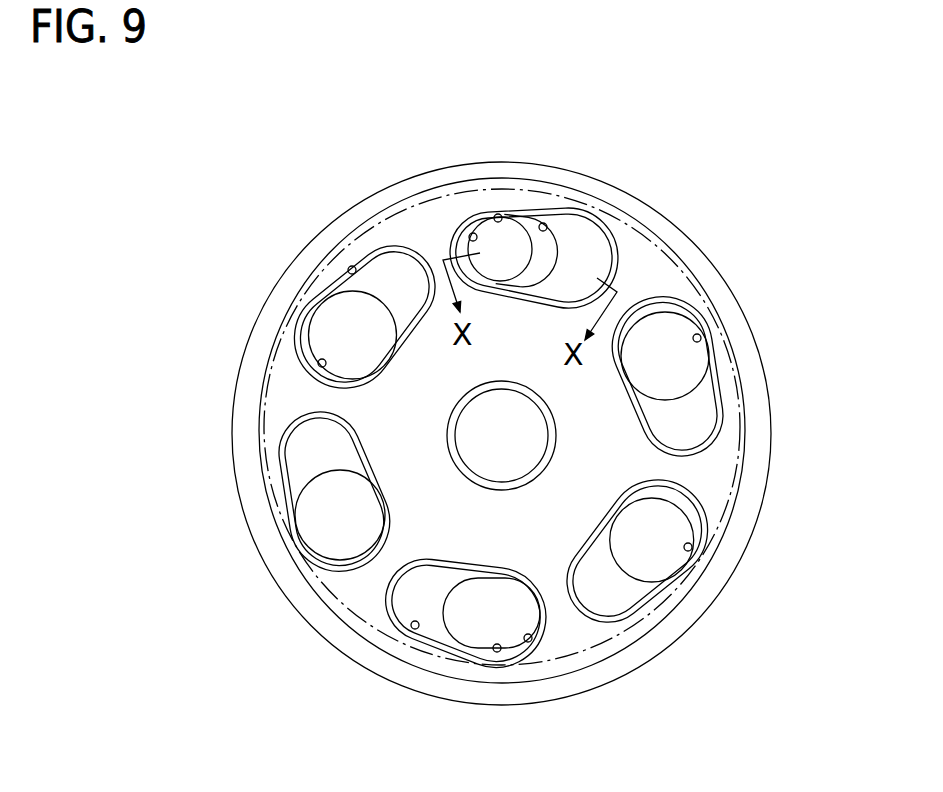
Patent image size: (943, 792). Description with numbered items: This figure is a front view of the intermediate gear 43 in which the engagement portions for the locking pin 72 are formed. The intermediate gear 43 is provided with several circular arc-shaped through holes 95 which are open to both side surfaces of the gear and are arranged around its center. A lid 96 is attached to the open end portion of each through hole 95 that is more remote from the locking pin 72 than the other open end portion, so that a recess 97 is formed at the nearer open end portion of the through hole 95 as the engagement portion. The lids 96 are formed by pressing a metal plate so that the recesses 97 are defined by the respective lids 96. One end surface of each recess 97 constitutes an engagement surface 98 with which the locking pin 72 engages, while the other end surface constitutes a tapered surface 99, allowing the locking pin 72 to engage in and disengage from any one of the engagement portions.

The intermediate gear 43 is at (278, 273).
The locking pin 72 is at (528, 284).
The through hole 95 is at (497, 214).
The lid 96 is at (459, 238).
The recess 97 is at (545, 225).
The engagement surface 98 is at (471, 234).
The tapered surface 99 is at (590, 247).